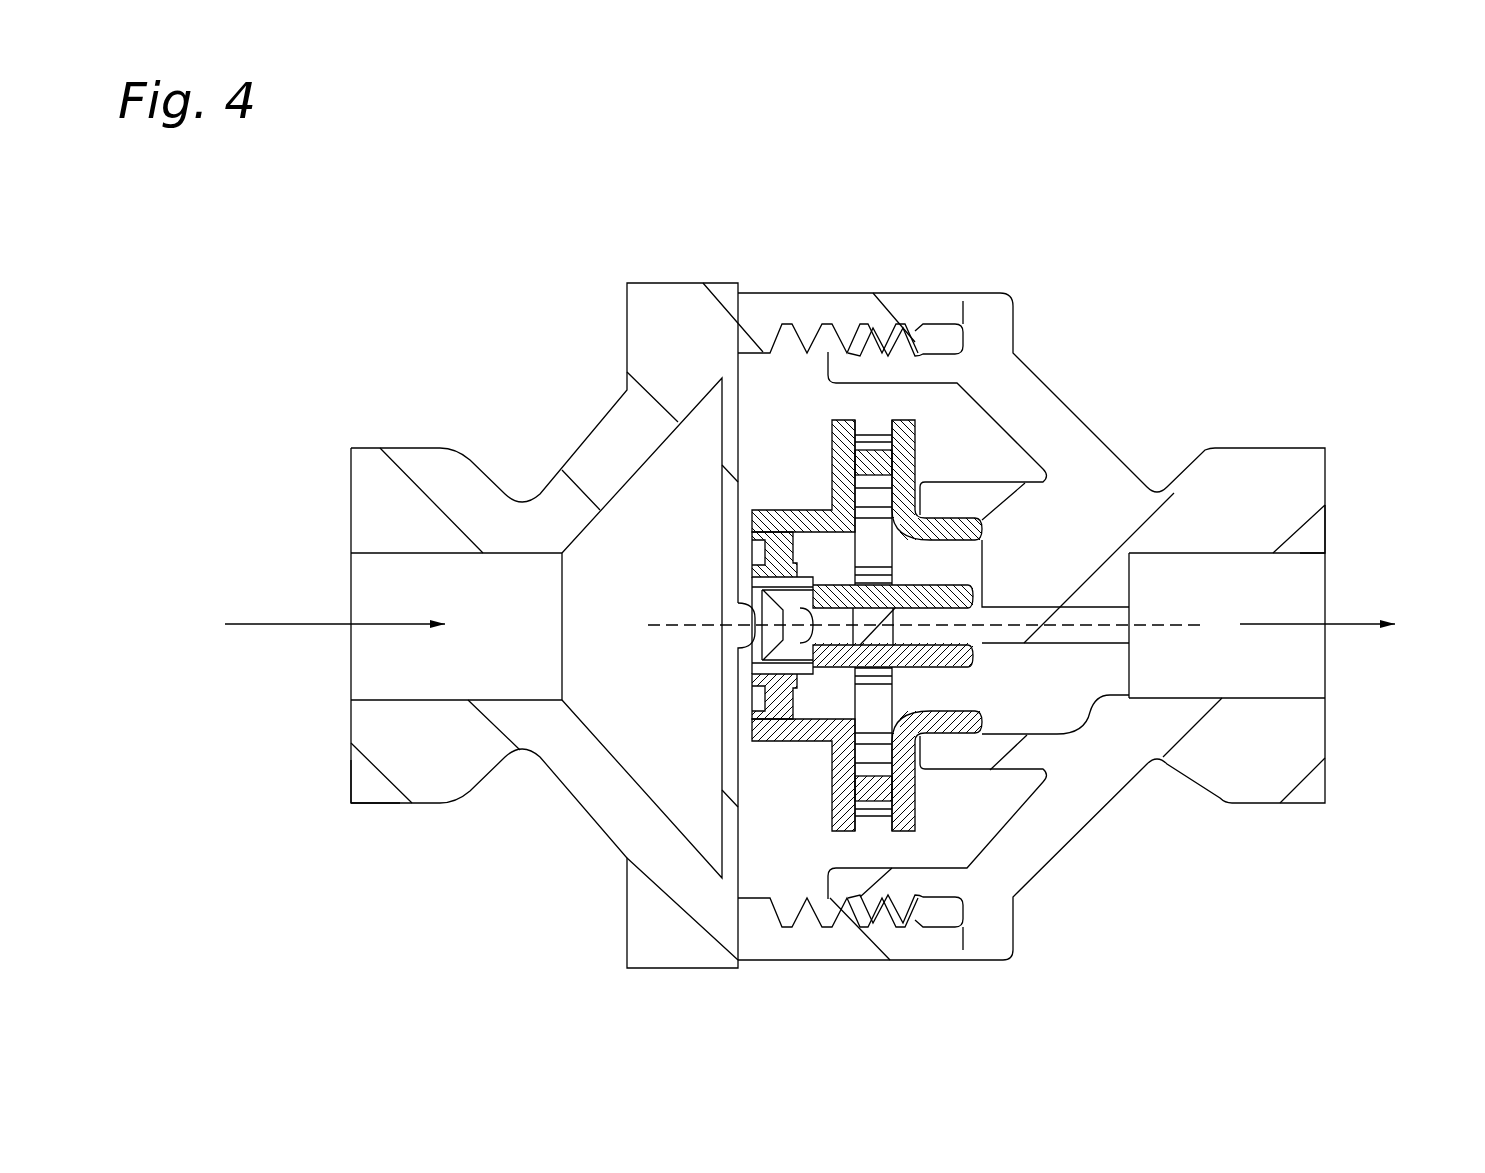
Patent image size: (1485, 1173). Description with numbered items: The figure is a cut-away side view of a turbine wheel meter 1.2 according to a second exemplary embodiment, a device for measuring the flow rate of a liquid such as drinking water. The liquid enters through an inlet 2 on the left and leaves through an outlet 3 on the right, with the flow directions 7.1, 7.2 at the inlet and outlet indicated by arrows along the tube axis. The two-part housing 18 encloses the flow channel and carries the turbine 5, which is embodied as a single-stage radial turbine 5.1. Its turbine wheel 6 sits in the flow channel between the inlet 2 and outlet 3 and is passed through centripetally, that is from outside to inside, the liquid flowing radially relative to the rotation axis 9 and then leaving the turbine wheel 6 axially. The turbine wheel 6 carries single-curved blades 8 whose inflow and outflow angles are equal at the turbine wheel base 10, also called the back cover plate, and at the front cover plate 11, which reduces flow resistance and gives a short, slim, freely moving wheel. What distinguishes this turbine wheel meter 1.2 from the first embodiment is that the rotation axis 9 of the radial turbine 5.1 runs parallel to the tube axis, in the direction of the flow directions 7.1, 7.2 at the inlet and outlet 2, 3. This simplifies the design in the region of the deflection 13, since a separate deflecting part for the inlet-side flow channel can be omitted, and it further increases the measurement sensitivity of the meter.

The turbine wheel meter 1.2 is at (457, 335).
The inlet 2 is at (355, 520).
The outlet 3 is at (1330, 678).
The turbine 5 is at (870, 427).
The radial turbine 5.1 is at (873, 625).
The turbine wheel 6 is at (805, 748).
The flow direction 7.1 is at (280, 625).
The flow direction 7.2 is at (1358, 636).
The single-curved blades 8 is at (883, 557).
The rotation axis 9 is at (683, 630).
The turbine wheel base 10 is at (832, 437).
The front cover plate 11 is at (915, 427).
The deflection 13 is at (953, 817).
The housing 18 is at (392, 783).